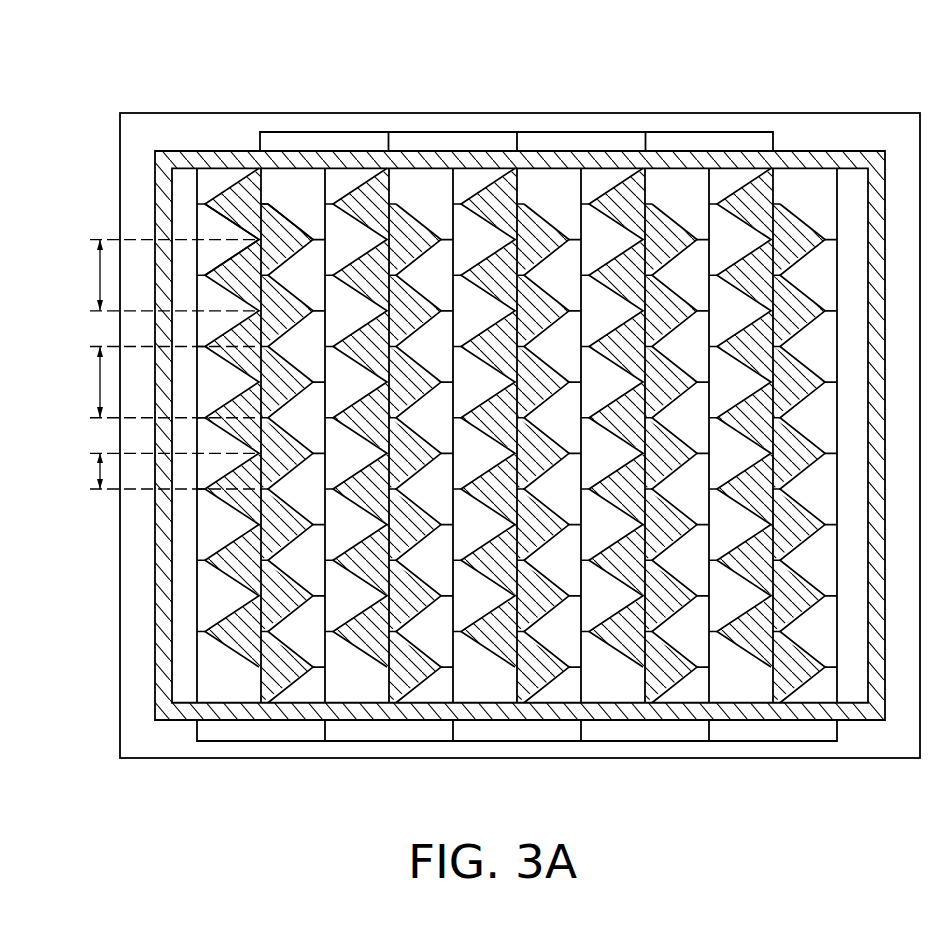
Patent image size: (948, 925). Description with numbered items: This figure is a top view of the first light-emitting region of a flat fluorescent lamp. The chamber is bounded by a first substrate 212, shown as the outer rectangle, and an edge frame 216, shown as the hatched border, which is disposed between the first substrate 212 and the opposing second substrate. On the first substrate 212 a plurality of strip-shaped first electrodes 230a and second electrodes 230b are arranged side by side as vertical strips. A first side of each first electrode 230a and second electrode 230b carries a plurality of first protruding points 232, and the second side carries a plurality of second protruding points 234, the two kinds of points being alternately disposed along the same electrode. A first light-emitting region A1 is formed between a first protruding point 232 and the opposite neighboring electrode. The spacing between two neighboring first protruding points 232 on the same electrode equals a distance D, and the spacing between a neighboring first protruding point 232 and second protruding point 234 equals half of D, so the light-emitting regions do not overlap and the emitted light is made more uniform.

The first substrate 212 is at (130, 712).
The edge frame 216 is at (165, 621).
The first electrode 230a is at (197, 179).
The second electrode 230b is at (290, 176).
The first protruding point 232 is at (257, 236).
The second protruding point 234 is at (263, 203).
The first light-emitting region A1 is at (367, 202).
The distance between two neighboring first protruding points D is at (149, 365).